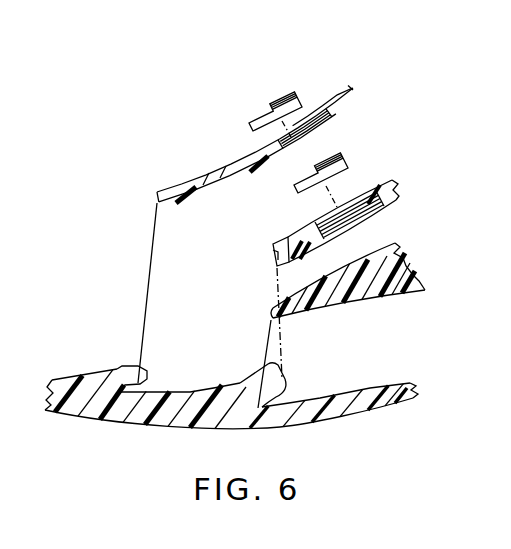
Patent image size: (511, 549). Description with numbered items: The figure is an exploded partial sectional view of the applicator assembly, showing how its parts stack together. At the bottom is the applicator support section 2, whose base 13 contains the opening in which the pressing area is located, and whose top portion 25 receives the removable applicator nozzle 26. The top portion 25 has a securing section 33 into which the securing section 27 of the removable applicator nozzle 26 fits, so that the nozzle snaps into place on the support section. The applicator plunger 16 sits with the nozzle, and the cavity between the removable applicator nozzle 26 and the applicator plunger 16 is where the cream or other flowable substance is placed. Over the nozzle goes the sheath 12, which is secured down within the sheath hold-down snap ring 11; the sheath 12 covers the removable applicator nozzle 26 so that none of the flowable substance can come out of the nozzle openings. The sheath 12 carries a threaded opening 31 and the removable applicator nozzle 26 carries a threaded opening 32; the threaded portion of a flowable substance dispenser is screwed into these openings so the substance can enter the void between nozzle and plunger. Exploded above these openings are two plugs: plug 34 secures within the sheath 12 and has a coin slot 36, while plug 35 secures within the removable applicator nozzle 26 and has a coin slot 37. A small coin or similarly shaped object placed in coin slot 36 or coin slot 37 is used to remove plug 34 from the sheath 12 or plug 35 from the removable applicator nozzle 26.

The applicator support section 2 is at (152, 428).
The sheath hold-down snap ring 11 is at (118, 367).
The sheath 12 is at (187, 184).
The base 13 is at (328, 420).
The applicator plunger 16 is at (360, 305).
The top portion 25 is at (252, 377).
The removable applicator nozzle 26 is at (280, 243).
The securing section 27 is at (274, 256).
The threaded opening 31 is at (279, 146).
The threaded opening 32 is at (318, 226).
The securing section 33 is at (284, 382).
The plug 34 is at (292, 90).
The plug 35 is at (348, 160).
The coin slot 36 is at (263, 112).
The coin slot 37 is at (295, 172).